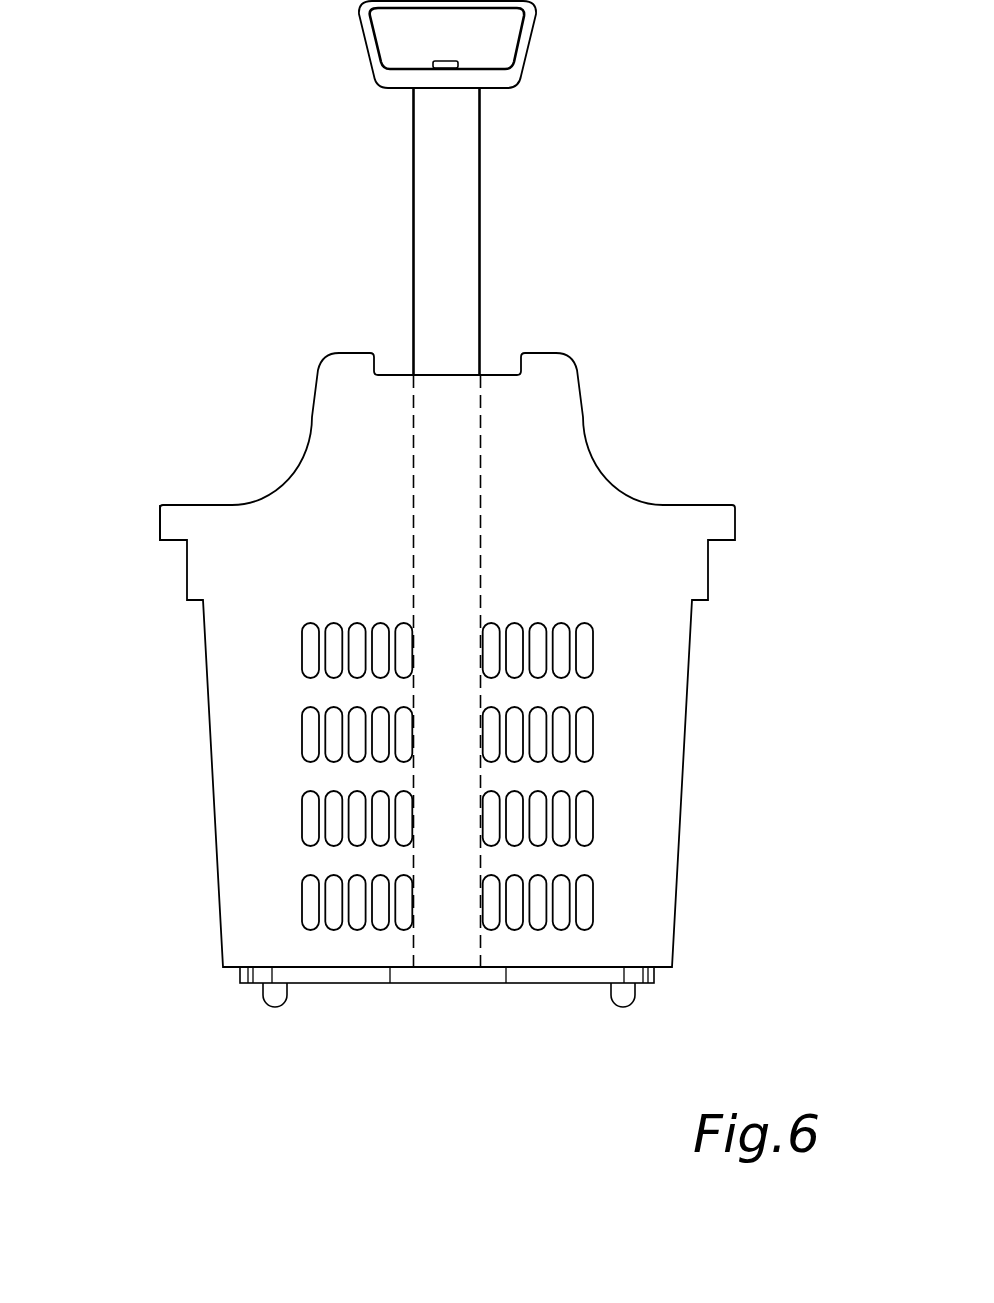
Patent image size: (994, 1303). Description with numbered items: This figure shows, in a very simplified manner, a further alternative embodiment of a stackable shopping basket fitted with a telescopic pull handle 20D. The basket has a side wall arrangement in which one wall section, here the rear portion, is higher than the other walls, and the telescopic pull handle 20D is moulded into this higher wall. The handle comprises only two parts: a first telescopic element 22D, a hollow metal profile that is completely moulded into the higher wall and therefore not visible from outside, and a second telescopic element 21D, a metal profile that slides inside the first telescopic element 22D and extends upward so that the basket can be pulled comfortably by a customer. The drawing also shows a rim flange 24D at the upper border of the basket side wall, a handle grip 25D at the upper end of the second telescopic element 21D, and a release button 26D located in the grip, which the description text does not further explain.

The telescopic pull handle 20D is at (402, 504).
The second telescopic element 21D is at (458, 527).
The first telescopic element 22D is at (462, 232).
The rim flange 24D is at (168, 523).
The handle grip 25D is at (519, 68).
The release button 26D is at (442, 61).